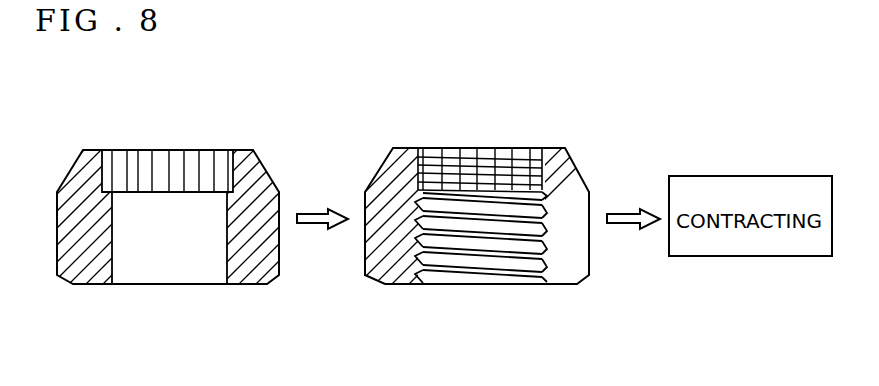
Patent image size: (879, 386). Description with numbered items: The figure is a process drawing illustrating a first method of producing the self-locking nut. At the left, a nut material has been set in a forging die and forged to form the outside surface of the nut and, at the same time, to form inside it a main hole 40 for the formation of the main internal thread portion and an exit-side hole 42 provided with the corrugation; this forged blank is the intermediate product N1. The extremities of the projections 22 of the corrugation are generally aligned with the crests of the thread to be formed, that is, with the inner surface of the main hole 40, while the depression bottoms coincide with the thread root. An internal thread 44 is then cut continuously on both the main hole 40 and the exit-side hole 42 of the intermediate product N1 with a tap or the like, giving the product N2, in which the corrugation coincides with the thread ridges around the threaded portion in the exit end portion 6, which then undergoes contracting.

The intermediate product N1 is at (233, 104).
The nut after contracting N2 is at (545, 104).
The main hole 40 is at (112, 258).
The projections 22 is at (112, 183).
The exit-side hole 42 is at (108, 167).
The exit end portion 6 is at (378, 154).
The internal thread 44 is at (466, 257).